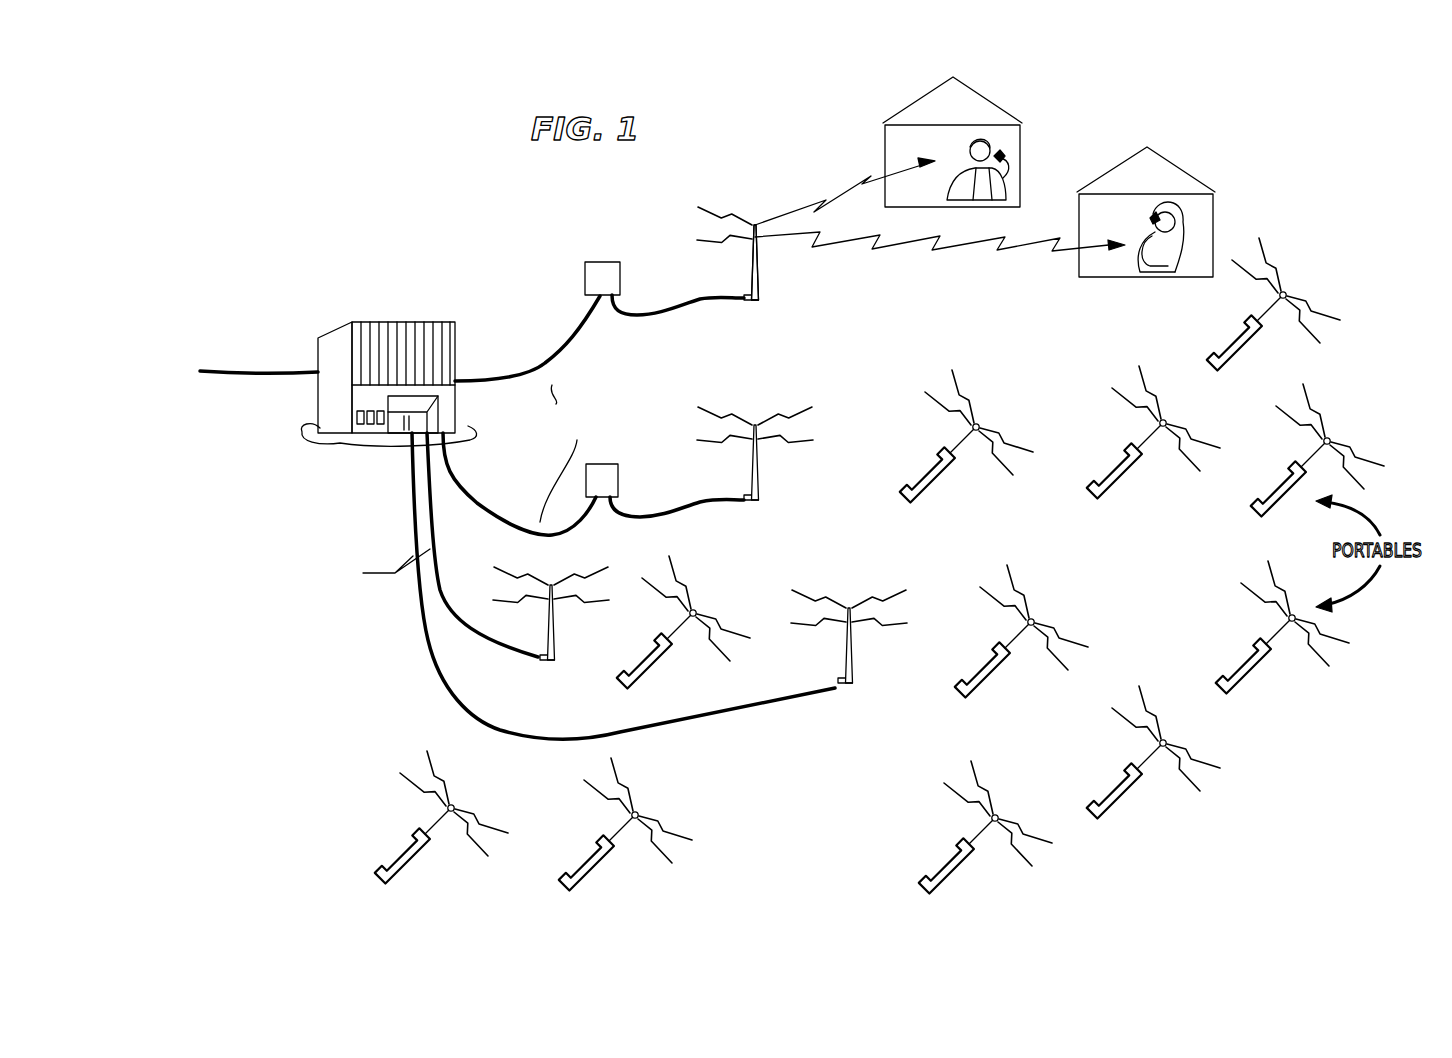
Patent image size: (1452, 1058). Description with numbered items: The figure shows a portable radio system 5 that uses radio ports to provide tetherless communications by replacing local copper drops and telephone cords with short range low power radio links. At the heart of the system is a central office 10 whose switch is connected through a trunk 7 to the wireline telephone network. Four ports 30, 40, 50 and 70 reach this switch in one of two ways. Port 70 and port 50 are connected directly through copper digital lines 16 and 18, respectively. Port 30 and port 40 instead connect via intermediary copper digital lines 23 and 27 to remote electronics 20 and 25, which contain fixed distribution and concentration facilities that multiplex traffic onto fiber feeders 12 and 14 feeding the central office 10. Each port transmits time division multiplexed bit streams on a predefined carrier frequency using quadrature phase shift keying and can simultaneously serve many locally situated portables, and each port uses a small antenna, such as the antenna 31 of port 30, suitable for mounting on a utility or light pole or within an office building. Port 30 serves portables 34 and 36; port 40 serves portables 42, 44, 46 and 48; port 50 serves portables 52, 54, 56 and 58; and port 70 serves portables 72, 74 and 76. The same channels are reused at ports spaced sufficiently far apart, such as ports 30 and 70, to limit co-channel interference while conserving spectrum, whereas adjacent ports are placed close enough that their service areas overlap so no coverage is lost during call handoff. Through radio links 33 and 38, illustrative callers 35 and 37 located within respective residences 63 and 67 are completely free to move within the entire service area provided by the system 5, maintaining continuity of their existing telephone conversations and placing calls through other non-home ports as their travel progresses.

The portable radio system 5 is at (244, 748).
The trunk 7 is at (247, 368).
The central office 10 is at (355, 330).
The fiber feeder 12 is at (572, 345).
The fiber feeder 14 is at (510, 522).
The copper digital line 16 is at (498, 645).
The copper digital line 18 is at (437, 689).
The remote electronics 20 is at (585, 280).
The intermediary copper digital line 23 is at (660, 318).
The remote electronics 25 is at (620, 480).
The intermediary copper digital line 27 is at (722, 506).
The port 30 is at (750, 305).
The antenna 31 is at (755, 222).
The radio link 33 is at (838, 188).
The portable 34 is at (1002, 152).
The caller 35 is at (1005, 178).
The portable 36 is at (1150, 218).
The caller 37 is at (1190, 233).
The radio link 38 is at (905, 245).
The port 40 is at (760, 498).
The portable 42 is at (940, 465).
The portable 44 is at (1132, 446).
The portable 46 is at (1295, 466).
The portable 48 is at (1235, 341).
The port 50 is at (847, 688).
The portable 52 is at (955, 851).
The portable 54 is at (1000, 649).
The portable 56 is at (1125, 773).
The portable 58 is at (1255, 646).
The residence 63 is at (990, 98).
The residence 67 is at (1180, 168).
The port 70 is at (549, 663).
The portable 72 is at (405, 845).
The portable 74 is at (655, 670).
The portable 76 is at (590, 852).